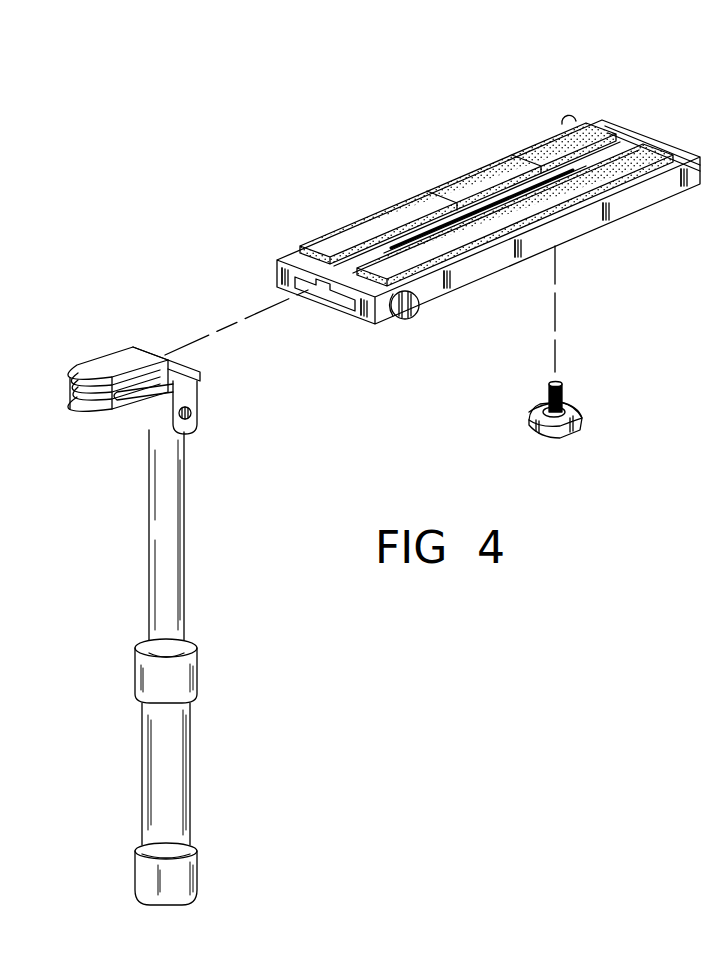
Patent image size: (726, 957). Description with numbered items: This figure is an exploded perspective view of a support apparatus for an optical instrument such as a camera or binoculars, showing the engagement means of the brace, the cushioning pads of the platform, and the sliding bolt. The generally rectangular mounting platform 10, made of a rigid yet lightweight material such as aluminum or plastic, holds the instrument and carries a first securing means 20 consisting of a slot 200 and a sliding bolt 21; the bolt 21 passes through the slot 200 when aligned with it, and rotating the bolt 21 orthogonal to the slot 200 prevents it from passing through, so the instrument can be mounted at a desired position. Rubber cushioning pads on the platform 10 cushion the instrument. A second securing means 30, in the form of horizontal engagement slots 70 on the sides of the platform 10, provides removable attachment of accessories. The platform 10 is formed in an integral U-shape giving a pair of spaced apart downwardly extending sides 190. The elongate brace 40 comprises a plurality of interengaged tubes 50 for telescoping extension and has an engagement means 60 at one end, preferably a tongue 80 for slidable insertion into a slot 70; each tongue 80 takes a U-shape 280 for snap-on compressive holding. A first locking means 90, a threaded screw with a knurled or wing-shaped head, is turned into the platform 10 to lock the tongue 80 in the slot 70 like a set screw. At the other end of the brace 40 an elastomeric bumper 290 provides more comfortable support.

The mounting platform 10 is at (490, 303).
The first securing means 20 is at (432, 197).
The sliding bolt 21 is at (583, 422).
The second securing means 30 is at (383, 352).
The elongate brace 40 is at (214, 506).
The interengaged tubes 50 is at (181, 577).
The engagement means 60 is at (94, 422).
The horizontal engagement slot 70 is at (658, 124).
The tongue 80 is at (122, 365).
The first locking means 90 is at (405, 320).
The downwardly extending sides 190 is at (277, 260).
The slot 200 is at (522, 157).
The U-shape 280 is at (196, 355).
The elastomeric bumper 290 is at (196, 870).